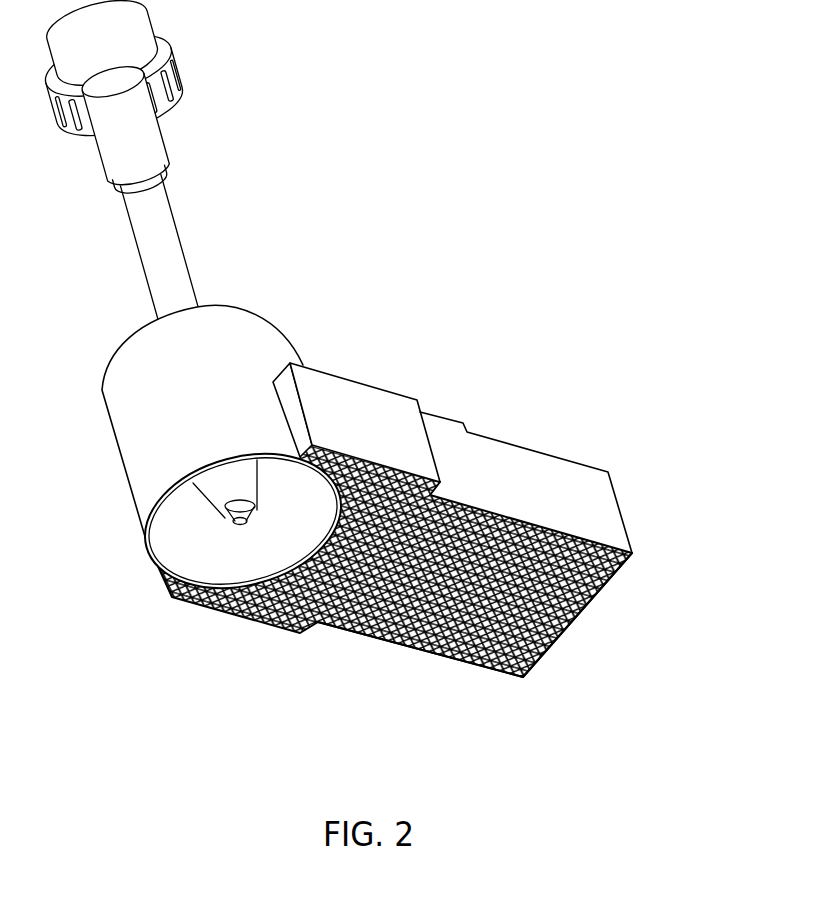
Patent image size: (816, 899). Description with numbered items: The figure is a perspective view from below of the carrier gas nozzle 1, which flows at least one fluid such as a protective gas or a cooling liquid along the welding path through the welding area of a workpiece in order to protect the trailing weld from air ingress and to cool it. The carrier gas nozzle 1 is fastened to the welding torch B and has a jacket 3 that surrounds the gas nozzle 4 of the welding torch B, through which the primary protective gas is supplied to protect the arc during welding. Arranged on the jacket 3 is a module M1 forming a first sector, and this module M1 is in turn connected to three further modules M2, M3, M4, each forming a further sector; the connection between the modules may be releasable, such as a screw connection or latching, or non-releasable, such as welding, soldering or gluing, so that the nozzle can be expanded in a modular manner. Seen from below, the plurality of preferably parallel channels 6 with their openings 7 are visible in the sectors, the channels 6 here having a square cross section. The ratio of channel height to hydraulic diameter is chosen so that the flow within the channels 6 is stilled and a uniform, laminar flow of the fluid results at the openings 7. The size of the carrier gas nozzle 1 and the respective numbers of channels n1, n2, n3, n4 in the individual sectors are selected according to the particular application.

The carrier gas nozzle 1 is at (390, 378).
The welding torch B is at (160, 218).
The jacket 3 is at (127, 383).
The gas nozzle 4 is at (218, 495).
The channels 6 is at (268, 625).
The openings 7 is at (397, 644).
The module M1 is at (373, 398).
The module M2 is at (615, 528).
The module M3 is at (578, 617).
The module M4 is at (538, 663).
The number of channels n1 is at (210, 622).
The number of channels n2 is at (630, 577).
The number of channels n3 is at (575, 634).
The number of channels n4 is at (473, 677).